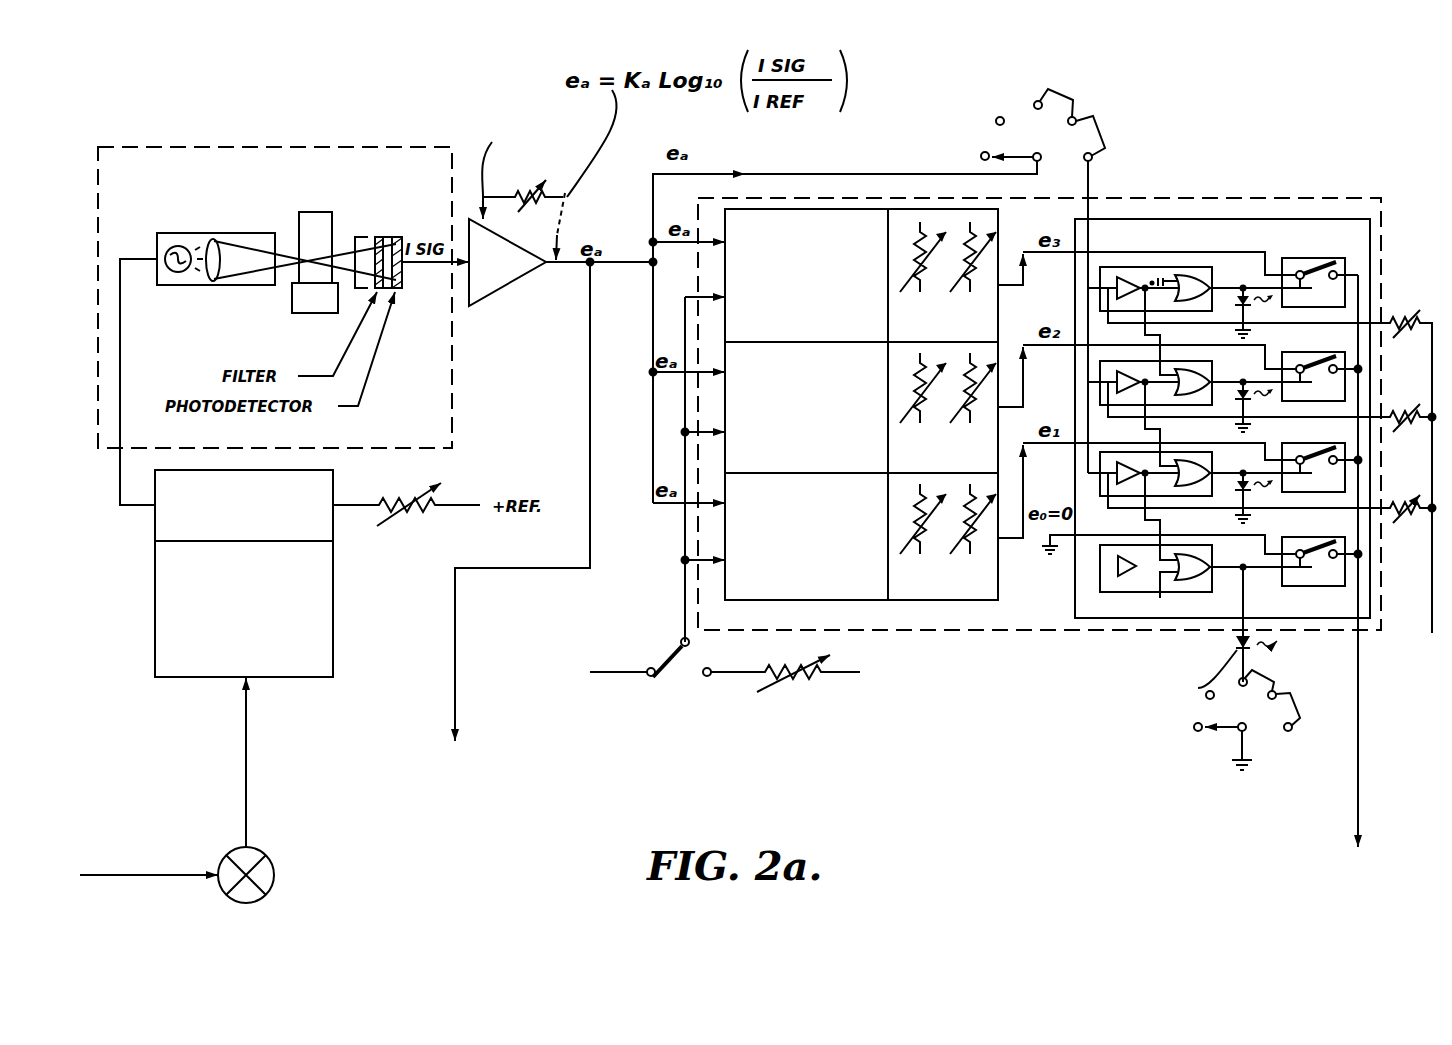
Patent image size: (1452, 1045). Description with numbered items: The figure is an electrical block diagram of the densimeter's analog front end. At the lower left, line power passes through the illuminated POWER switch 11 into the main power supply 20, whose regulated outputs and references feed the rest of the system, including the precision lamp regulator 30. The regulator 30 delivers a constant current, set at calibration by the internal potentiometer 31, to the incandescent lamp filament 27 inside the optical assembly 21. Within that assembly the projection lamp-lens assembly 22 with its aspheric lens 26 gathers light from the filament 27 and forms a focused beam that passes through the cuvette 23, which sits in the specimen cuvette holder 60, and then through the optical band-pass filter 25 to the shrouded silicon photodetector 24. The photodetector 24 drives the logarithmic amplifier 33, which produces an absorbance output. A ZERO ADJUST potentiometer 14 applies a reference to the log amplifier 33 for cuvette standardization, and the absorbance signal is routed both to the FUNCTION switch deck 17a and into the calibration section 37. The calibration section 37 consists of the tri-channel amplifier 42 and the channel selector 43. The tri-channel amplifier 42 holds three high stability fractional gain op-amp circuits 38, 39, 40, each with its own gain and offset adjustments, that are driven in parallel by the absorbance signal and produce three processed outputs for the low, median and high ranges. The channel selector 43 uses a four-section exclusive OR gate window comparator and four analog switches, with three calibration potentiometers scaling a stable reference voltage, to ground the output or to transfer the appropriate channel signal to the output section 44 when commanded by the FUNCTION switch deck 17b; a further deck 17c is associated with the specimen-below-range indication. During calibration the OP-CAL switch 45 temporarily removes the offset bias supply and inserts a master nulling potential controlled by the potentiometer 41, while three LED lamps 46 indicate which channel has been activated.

The POWER switch 11 is at (232, 903).
The ZERO ADJUST potentiometer 14 is at (522, 192).
The FUNCTION switch deck 17a is at (520, 778).
The FUNCTION switch deck 17b is at (1072, 176).
The FUNCTION switch deck 17c is at (1282, 760).
The main power supply 20 is at (155, 640).
The optical assembly 21 is at (188, 145).
The projection lamp-lens assembly 22 is at (185, 233).
The cuvette 23 is at (307, 212).
The photodetector 24 is at (396, 272).
The optical band-pass filter 25 is at (378, 237).
The aspheric lens 26 is at (212, 281).
The lamp filament 27 is at (172, 272).
The precision lamp regulator 30 is at (155, 507).
The internal potentiometer 31 is at (388, 497).
The logarithmic amplifier 33 is at (487, 287).
The calibration section 37 is at (783, 196).
The fractional gain op-amp circuit 38 is at (725, 548).
The fractional gain op-amp circuit 39 is at (725, 350).
The fractional gain op-amp circuit 40 is at (800, 371).
The master nulling potentiometer 41 is at (788, 688).
The tri-channel amplifier 42 is at (990, 603).
The channel selector 43 is at (1075, 600).
The output section 44 is at (1305, 592).
The OP-CAL switch 45 is at (649, 680).
The LED lamps 46 is at (1243, 284).
The specimen cuvette holder 60 is at (305, 313).